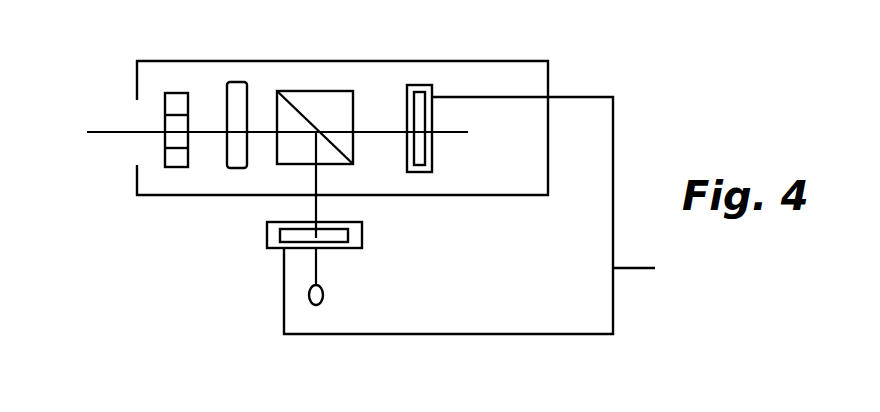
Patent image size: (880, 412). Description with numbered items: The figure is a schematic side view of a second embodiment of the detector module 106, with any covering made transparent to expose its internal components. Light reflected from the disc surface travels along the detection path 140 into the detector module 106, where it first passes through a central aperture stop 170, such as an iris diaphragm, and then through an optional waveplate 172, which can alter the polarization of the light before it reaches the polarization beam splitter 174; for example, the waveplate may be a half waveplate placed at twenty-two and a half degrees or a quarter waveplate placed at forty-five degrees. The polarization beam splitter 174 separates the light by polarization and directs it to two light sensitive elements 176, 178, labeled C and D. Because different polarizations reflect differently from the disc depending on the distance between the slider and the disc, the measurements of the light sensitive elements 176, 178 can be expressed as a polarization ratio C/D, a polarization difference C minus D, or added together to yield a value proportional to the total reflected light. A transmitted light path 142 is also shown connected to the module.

The detector module 106 is at (487, 61).
The detection path 140 is at (115, 133).
The transmitted light path 142 is at (640, 268).
The central aperture stop 170 is at (168, 92).
The waveplate 172 is at (232, 168).
The polarization beam splitter 174 is at (354, 104).
The light sensitive element 176 is at (423, 172).
The light sensitive element 178 is at (350, 248).